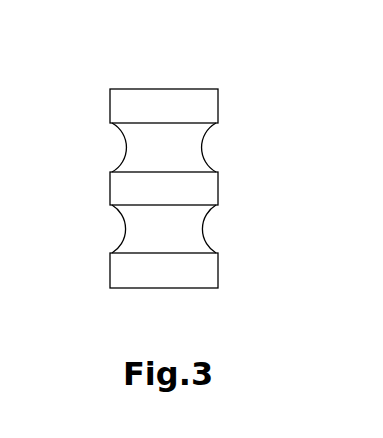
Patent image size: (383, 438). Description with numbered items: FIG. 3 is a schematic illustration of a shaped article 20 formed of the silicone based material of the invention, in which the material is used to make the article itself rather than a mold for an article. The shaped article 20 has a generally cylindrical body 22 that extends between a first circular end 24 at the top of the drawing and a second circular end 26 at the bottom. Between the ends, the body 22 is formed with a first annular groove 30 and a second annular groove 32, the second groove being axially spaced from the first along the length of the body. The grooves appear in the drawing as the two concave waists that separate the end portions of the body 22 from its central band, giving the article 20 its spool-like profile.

The shaped article 20 is at (154, 183).
The generally cylindrical body 22 is at (113, 192).
The first circular end 24 is at (168, 88).
The second circular end 26 is at (182, 289).
The first annular groove 30 is at (180, 153).
The second annular groove 32 is at (185, 228).